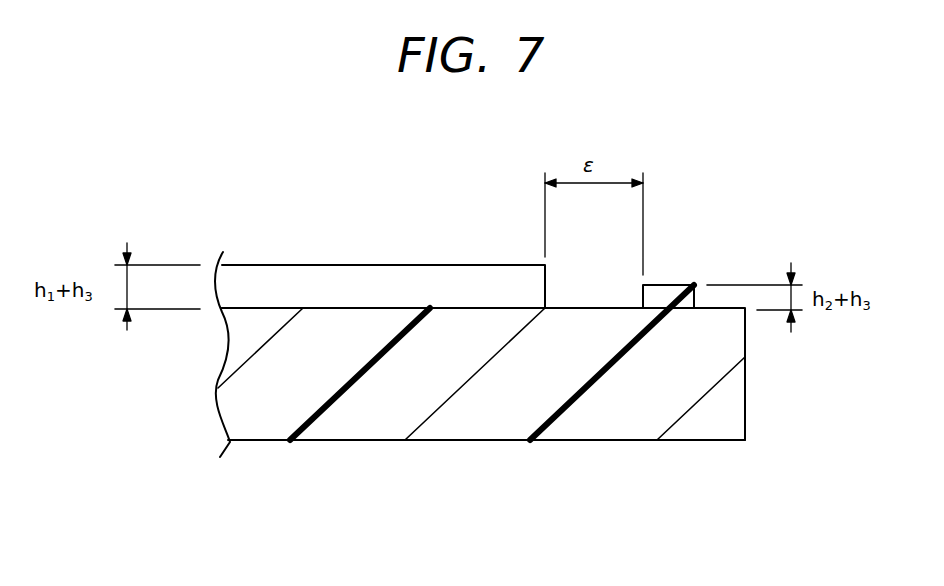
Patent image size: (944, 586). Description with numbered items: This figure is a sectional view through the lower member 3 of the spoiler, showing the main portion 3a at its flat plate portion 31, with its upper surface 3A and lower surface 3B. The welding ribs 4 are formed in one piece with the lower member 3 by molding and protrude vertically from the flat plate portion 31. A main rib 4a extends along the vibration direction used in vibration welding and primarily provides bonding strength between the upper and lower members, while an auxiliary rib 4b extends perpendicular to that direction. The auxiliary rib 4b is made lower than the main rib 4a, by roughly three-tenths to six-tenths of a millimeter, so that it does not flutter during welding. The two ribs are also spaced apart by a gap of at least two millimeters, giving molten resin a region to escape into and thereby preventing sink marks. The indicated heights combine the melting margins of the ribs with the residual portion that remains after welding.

The lower member 3 is at (480, 396).
The main portion 3a is at (376, 240).
The exposed surface region of substrate 3A is at (500, 308).
The second surface of substrate 3B is at (375, 440).
The flat plate portion 31 is at (318, 307).
The welding ribs 4 is at (474, 240).
The main rib 4a is at (390, 263).
The auxiliary rib 4b is at (665, 283).